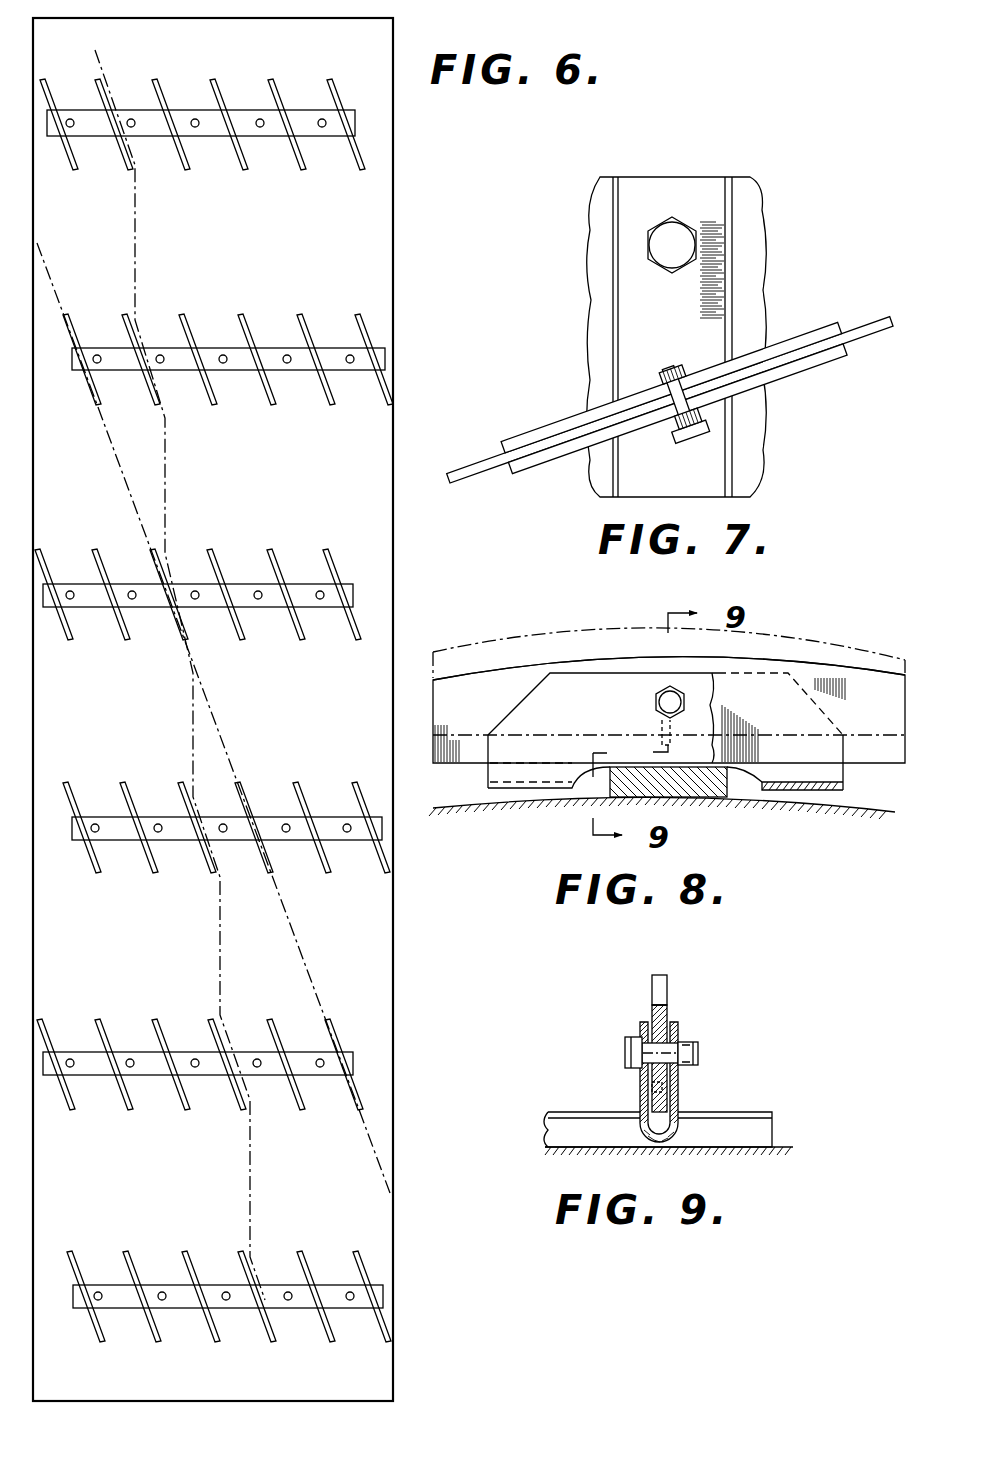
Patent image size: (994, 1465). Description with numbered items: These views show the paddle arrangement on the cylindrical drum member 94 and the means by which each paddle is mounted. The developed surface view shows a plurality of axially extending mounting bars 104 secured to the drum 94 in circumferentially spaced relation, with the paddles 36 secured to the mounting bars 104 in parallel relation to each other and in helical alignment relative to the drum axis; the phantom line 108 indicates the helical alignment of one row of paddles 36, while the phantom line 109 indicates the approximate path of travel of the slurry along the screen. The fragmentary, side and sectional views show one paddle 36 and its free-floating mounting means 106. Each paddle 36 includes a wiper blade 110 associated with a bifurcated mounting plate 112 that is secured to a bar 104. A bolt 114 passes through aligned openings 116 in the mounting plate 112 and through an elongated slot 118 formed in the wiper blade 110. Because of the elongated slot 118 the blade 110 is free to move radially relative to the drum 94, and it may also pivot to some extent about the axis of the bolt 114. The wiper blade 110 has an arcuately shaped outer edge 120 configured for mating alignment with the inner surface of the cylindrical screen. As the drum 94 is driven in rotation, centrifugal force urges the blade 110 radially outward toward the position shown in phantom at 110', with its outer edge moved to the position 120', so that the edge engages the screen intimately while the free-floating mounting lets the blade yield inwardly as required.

In FIG. 6, the paddle 36 is at (160, 92).
In FIG. 8, the paddle 36 is at (790, 632).
In FIG. 9, the paddle 36 is at (683, 1021).
In FIG. 7, the cylindrical drum member 94 is at (750, 237).
In FIG. 6, the mounting bar 104 is at (298, 110).
In FIG. 7, the mounting bar 104 is at (665, 182).
In FIG. 8, the mounting bar 104 is at (708, 792).
In FIG. 9, the mounting bar 104 is at (766, 1125).
In FIG. 8, the free-floating mounting means 106 is at (645, 662).
In FIG. 6, the phantom line 108 is at (108, 442).
In FIG. 6, the phantom line 109 is at (137, 210).
In FIG. 7, the wiper blade 110 is at (873, 304).
In FIG. 8, the wiper blade 110 is at (874, 794).
In FIG. 9, the wiper blade 110 is at (617, 1055).
In FIG. 8, the wiper blade in radially outward position 110' is at (878, 680).
In FIG. 8, the mounting plate 112 is at (538, 770).
In FIG. 9, the mounting plate 112 is at (679, 1090).
In FIG. 8, the bolt 114 is at (652, 700).
In FIG. 9, the bolt 114 is at (699, 1046).
In FIG. 9, the aligned openings 116 is at (641, 1060).
In FIG. 8, the elongated slot 118 is at (660, 727).
In FIG. 9, the elongated slot 118 is at (650, 1085).
In FIG. 8, the arcuately shaped outer edge 120 is at (669, 658).
In FIG. 9, the arcuately shaped outer edge 120 is at (699, 991).
In FIG. 8, the arcuately shaped outer edge in outward position 120' is at (669, 634).
In FIG. 9, the arcuately shaped outer edge in outward position 120' is at (631, 973).